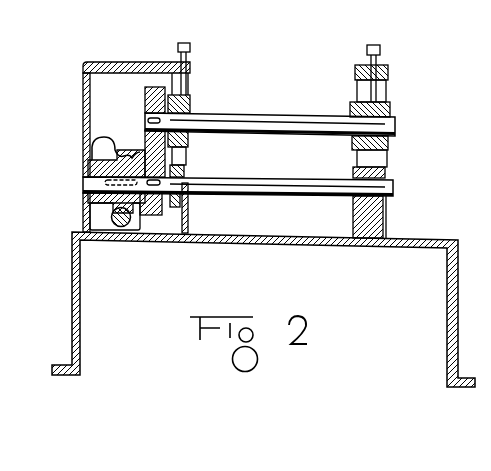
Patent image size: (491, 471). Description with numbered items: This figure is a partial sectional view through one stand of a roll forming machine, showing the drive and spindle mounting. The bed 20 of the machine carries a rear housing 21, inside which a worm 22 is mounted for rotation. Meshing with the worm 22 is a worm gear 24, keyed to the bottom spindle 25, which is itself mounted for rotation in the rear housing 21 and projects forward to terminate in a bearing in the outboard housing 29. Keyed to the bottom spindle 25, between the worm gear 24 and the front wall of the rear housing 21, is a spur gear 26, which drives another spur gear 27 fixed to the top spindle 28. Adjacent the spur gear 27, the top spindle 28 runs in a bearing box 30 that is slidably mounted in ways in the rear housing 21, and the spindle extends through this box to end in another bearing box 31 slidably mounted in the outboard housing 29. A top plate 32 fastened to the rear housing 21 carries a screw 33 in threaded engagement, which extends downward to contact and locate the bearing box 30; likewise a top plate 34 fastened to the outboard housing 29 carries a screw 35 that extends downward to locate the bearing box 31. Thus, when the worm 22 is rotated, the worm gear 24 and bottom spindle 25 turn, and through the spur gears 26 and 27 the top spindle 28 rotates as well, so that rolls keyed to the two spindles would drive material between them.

The bed 20 is at (72, 270).
The rear housing 21 is at (84, 113).
The worm 22 is at (112, 218).
The worm gear 24 is at (93, 139).
The bottom spindle 25 is at (262, 198).
The spur gear 26 is at (151, 215).
The spur gear 27 is at (145, 97).
The top spindle 28 is at (279, 114).
The outboard housing 29 is at (386, 219).
The bearing box 30 is at (190, 100).
The bearing box 31 is at (391, 107).
The top plate 32 is at (88, 64).
The screw 33 is at (190, 48).
The top plate 34 is at (388, 73).
The screw 35 is at (367, 53).